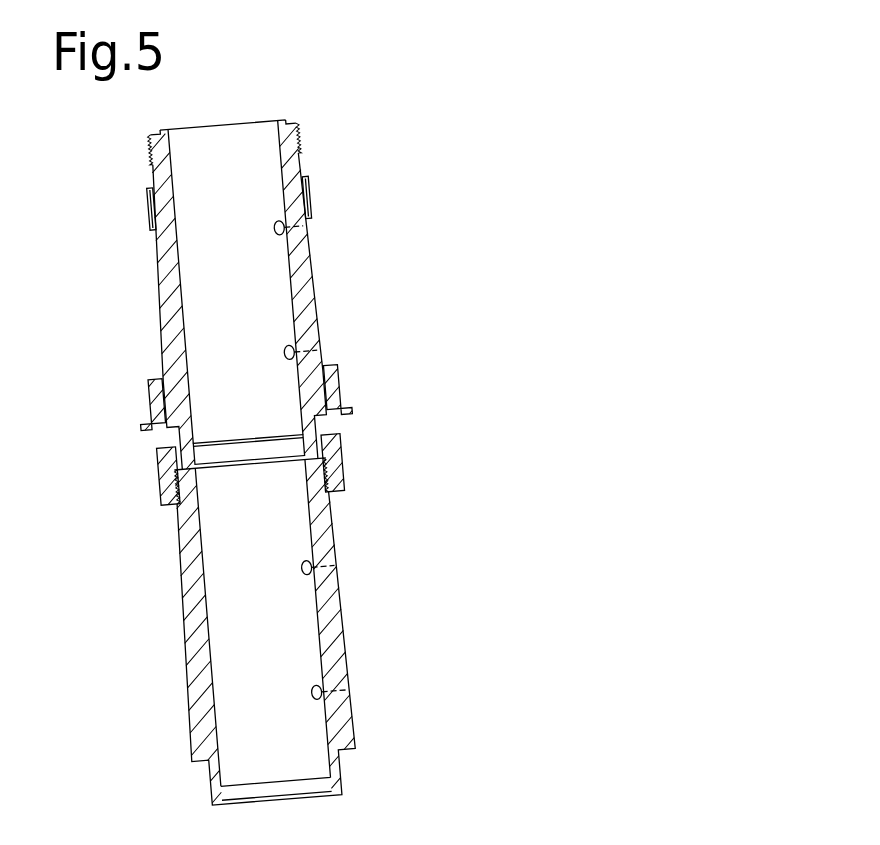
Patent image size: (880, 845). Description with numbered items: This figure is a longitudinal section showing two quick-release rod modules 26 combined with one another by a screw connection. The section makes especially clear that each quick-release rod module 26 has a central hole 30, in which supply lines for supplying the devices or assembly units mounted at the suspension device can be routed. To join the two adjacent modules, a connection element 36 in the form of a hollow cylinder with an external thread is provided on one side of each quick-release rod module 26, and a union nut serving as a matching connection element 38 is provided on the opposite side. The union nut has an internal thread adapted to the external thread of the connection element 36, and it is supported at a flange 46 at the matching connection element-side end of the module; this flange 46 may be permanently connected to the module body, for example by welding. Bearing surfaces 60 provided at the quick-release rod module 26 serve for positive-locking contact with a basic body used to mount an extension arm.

The quick-release rod module 26 is at (302, 312).
The central hole 30 is at (233, 287).
The connection element 36 is at (303, 137).
The matching connection element 38 is at (332, 470).
The flange 46 is at (318, 432).
The bearing surface 60 is at (312, 196).